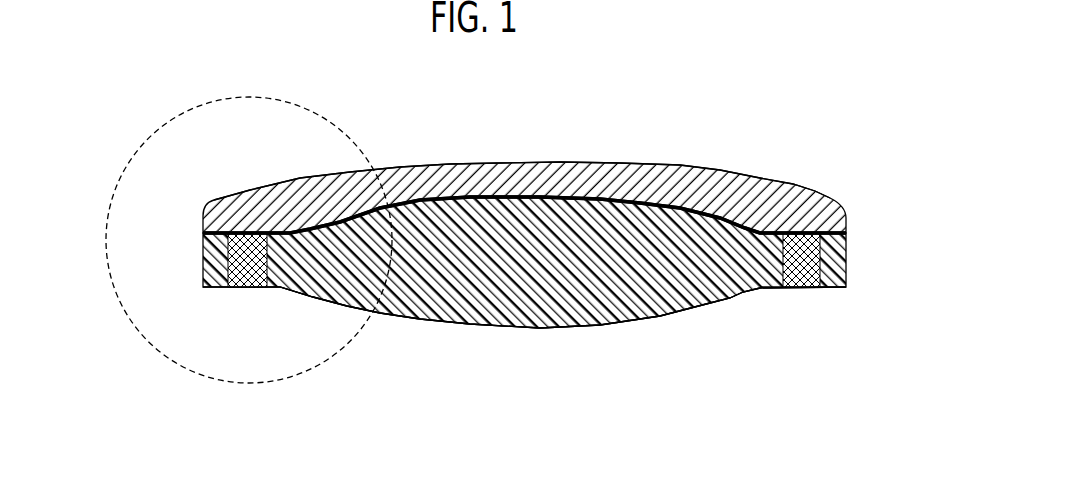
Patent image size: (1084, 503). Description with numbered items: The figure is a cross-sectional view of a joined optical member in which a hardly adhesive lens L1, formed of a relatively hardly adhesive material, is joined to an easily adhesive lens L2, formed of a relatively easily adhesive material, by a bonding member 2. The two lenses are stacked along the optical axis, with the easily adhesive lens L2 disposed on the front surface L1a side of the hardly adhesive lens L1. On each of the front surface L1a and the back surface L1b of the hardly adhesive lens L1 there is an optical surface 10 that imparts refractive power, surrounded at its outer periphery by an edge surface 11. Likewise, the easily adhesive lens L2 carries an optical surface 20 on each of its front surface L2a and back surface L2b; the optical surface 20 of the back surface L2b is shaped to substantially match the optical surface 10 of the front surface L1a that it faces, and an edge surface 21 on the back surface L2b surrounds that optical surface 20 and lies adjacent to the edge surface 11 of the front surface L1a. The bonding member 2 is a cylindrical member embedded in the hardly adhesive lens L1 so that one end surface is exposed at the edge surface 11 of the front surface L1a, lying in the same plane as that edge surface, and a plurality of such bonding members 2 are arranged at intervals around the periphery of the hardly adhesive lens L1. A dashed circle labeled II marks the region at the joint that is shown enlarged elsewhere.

The bonding member 2 is at (243, 288).
The optical surface 10 is at (702, 210).
The edge surface 11 is at (777, 233).
The optical surface 20 is at (467, 162).
The edge surface 21 is at (278, 233).
The hardly adhesive lens L1 is at (852, 262).
The easily adhesive lens L2 is at (852, 210).
The front surface L1a is at (803, 130).
The back surface L1b is at (803, 372).
The front surface L2a is at (416, 156).
The back surface L2b is at (370, 430).
The enlarged region shown in FIG. 2 II is at (108, 262).